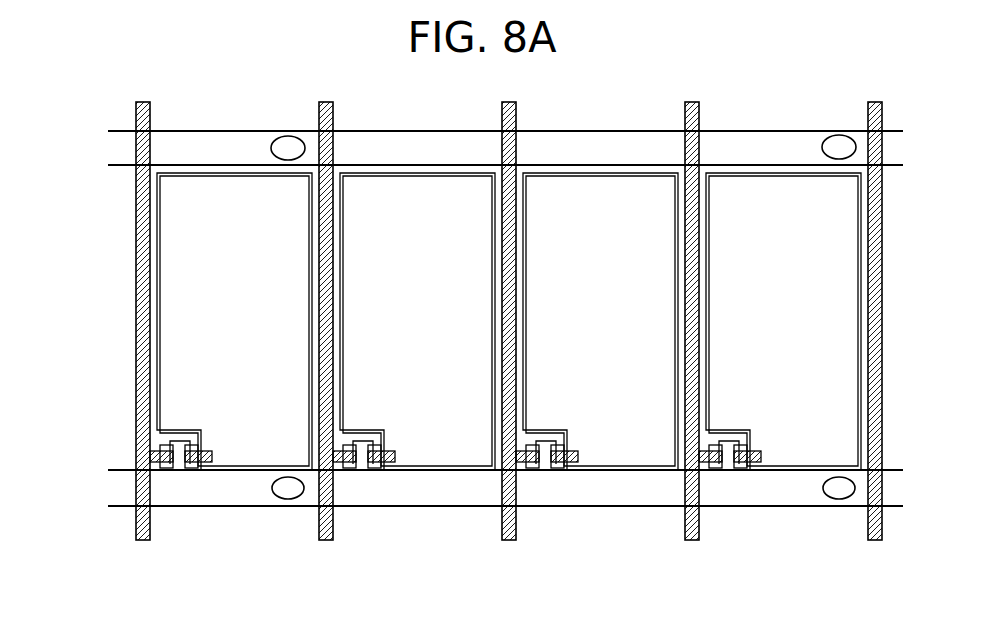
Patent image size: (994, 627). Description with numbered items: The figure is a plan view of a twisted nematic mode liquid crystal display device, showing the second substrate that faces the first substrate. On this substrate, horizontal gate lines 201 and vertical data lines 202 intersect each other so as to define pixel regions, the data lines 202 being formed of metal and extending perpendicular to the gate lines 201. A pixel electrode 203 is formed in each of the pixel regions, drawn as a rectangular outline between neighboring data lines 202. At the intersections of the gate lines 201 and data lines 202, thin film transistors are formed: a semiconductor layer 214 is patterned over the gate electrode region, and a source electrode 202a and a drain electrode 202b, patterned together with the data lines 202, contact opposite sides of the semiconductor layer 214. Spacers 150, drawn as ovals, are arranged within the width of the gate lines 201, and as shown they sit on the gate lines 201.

The spacer 150 is at (293, 492).
The gate line 201 is at (186, 488).
The data line 202 is at (143, 410).
The source electrode 202a is at (340, 473).
The drain electrode 202b is at (392, 472).
The pixel electrode 203 is at (160, 280).
The semiconductor layer 214 is at (542, 468).